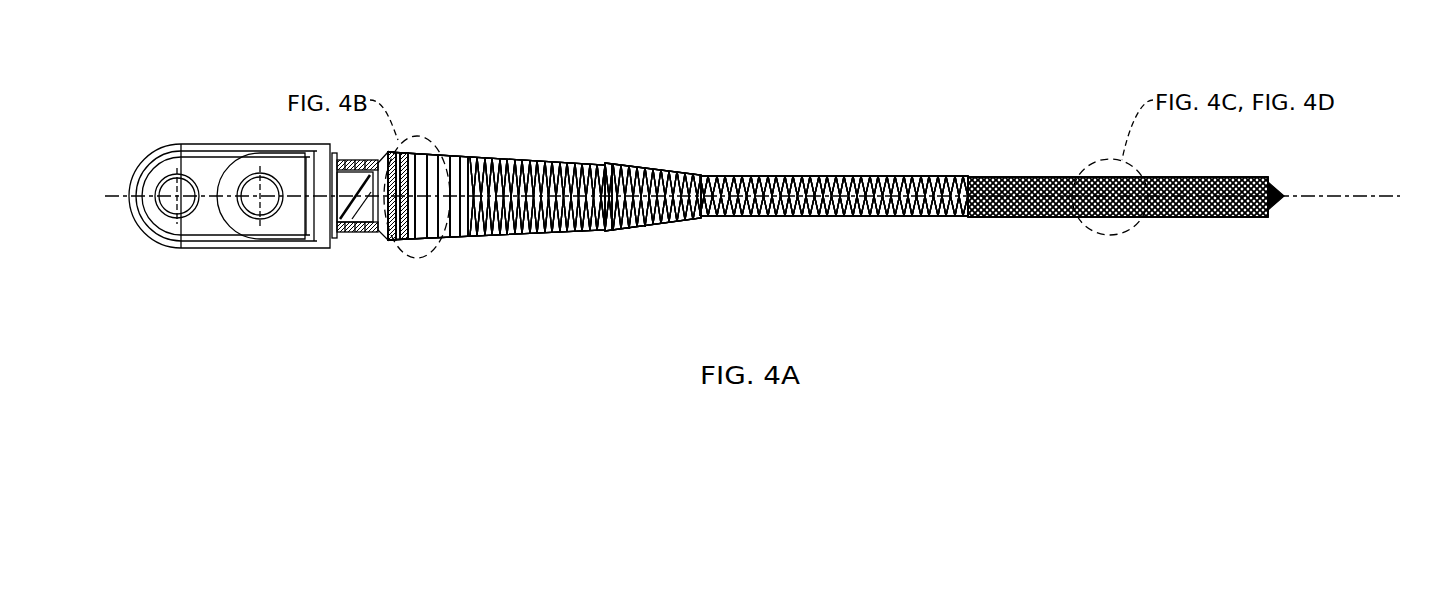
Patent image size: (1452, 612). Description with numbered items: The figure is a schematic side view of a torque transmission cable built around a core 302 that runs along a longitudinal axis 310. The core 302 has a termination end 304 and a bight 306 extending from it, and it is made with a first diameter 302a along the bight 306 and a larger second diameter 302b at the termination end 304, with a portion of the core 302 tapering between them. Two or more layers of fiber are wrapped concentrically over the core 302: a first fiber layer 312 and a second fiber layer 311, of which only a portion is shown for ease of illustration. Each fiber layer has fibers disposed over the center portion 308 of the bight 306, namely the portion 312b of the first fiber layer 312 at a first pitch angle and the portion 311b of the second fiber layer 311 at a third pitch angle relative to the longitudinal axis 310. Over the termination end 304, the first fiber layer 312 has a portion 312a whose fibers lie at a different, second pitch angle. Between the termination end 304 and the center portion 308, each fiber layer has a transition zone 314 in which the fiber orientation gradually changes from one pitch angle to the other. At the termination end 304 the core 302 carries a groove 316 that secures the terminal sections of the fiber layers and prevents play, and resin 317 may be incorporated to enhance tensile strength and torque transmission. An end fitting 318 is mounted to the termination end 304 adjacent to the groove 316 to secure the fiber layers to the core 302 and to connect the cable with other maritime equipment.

The core 302 is at (362, 151).
The first diameter 302a is at (1020, 255).
The second diameter 302b is at (501, 141).
The termination end 304 is at (388, 238).
The bight 306 is at (908, 175).
The center portion 308 is at (1245, 217).
The longitudinal axis 310 is at (1322, 193).
The second fiber layer 311 is at (1118, 225).
The portion of second fiber layer 311b is at (1138, 177).
The first fiber layer 312 is at (782, 188).
The portion of first fiber layer 312a is at (422, 163).
The portion of first fiber layer 312b is at (1118, 174).
The transition zone 314 is at (955, 255).
The groove 316 is at (372, 232).
The resin 317 is at (359, 232).
The end fitting 318 is at (242, 248).